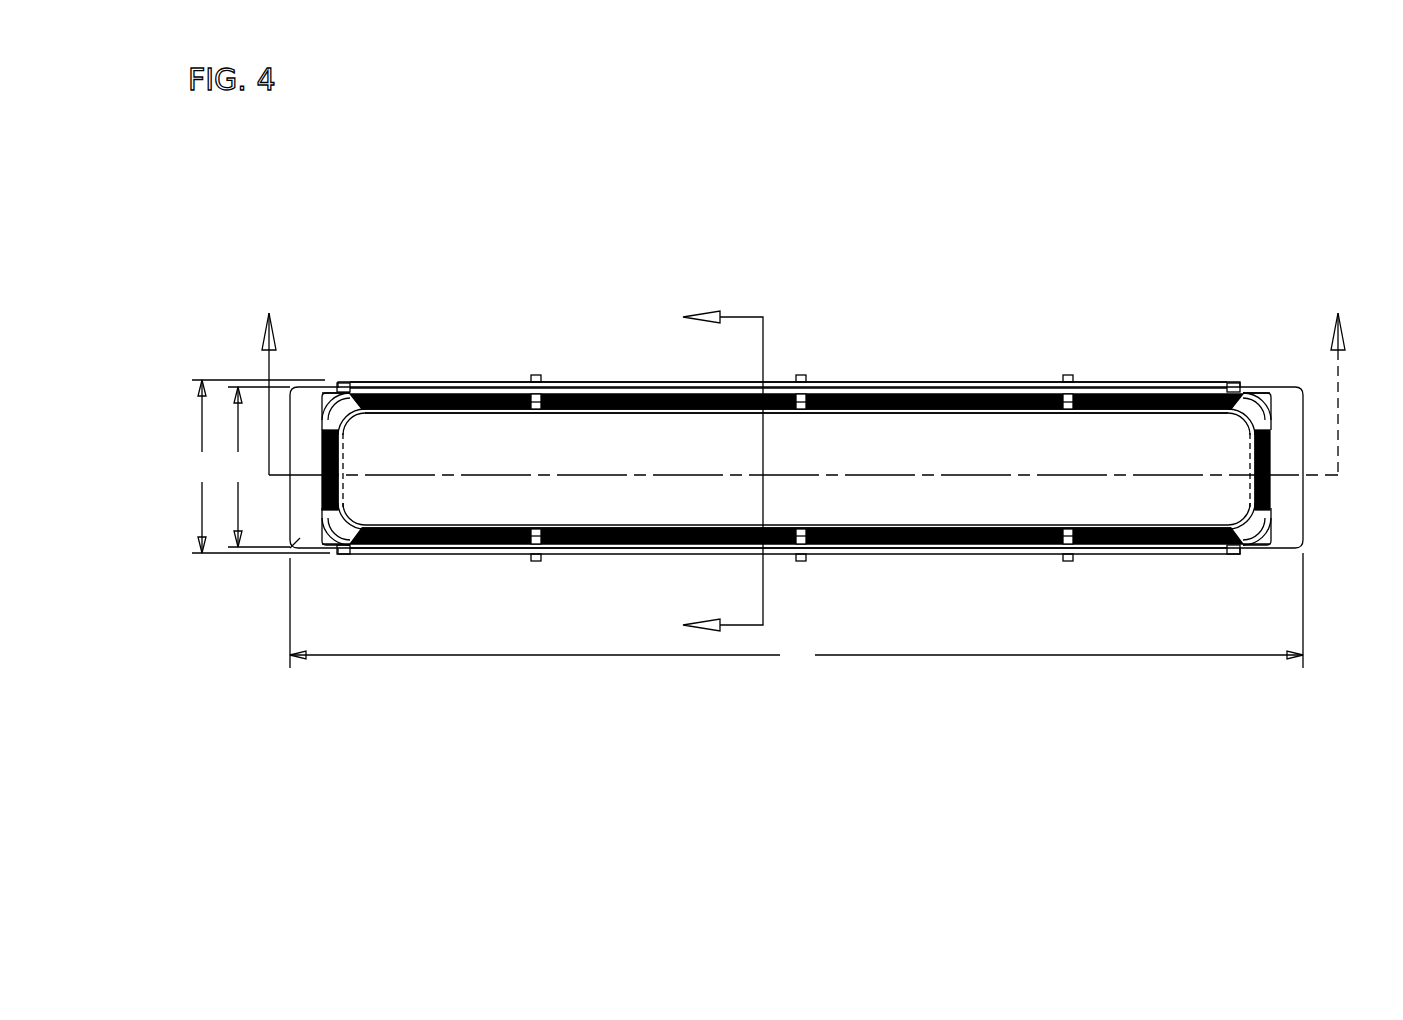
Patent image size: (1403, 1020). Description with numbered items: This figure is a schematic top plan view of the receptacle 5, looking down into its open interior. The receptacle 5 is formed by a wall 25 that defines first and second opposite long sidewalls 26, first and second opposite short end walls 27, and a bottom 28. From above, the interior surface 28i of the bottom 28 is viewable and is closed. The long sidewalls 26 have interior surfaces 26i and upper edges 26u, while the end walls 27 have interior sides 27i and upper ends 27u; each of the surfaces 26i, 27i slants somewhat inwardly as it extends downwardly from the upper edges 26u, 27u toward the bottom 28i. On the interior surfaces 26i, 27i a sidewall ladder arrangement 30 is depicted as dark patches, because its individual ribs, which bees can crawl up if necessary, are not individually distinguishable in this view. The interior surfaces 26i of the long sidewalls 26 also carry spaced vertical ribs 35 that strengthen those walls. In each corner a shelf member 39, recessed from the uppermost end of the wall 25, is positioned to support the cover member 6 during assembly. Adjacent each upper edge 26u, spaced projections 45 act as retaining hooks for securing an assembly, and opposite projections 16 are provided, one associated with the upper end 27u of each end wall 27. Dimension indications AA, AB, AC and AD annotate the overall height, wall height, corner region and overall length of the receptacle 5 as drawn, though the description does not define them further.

The receptacle 5 is at (919, 280).
The cover member 6 is at (711, 472).
The projections 16 is at (305, 412).
The wall 25 is at (1011, 381).
The long sidewalls 26 is at (497, 381).
The upper edge of sidewall 26u is at (1112, 386).
The interior surface of sidewall 26i is at (708, 415).
The end walls 27 is at (282, 427).
The upper end of end wall 27u is at (332, 388).
The interior sides of end walls 27i is at (340, 468).
The bottom 28 is at (997, 452).
The interior surface of bottom 28i is at (1090, 458).
The sidewall ladder arrangement 30 is at (340, 447).
The vertical ribs 35 is at (537, 410).
The shelf member 39 is at (345, 411).
The projections 45 is at (537, 375).
The overall height dimension AA is at (259, 466).
The housing height dimension AB is at (257, 467).
The corner radius dimension AC is at (290, 550).
The overall length dimension AD is at (796, 610).